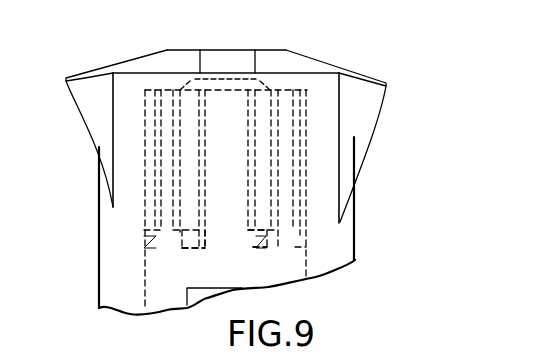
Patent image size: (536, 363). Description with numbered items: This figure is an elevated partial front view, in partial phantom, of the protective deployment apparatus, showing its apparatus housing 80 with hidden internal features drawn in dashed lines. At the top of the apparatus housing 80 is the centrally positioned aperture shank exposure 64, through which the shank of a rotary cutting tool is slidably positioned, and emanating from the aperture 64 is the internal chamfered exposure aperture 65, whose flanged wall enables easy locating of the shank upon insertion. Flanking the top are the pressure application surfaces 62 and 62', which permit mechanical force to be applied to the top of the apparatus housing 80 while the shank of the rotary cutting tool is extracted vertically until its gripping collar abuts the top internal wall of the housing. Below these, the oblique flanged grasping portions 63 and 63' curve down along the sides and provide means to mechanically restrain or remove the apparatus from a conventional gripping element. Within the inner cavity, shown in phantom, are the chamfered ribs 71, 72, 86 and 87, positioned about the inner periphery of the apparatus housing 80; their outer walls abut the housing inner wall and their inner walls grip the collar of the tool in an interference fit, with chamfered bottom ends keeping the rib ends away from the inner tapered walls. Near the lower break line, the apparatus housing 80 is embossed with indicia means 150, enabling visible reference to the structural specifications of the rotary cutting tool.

The pressure application surface 62 is at (337, 53).
The pressure application surface 62' is at (101, 50).
The flanged grasping portion 63 is at (72, 144).
The flanged grasping portion 63' is at (380, 154).
The aperture shank exposure 64 is at (254, 62).
The internal chamfered exposure aperture 65 is at (186, 88).
The chamfered rib 71 is at (148, 212).
The chamfered rib 72 is at (301, 202).
The apparatus housing 80 is at (98, 195).
The rib 86 is at (262, 238).
The rib 87 is at (180, 247).
The indicia means 150 is at (187, 306).